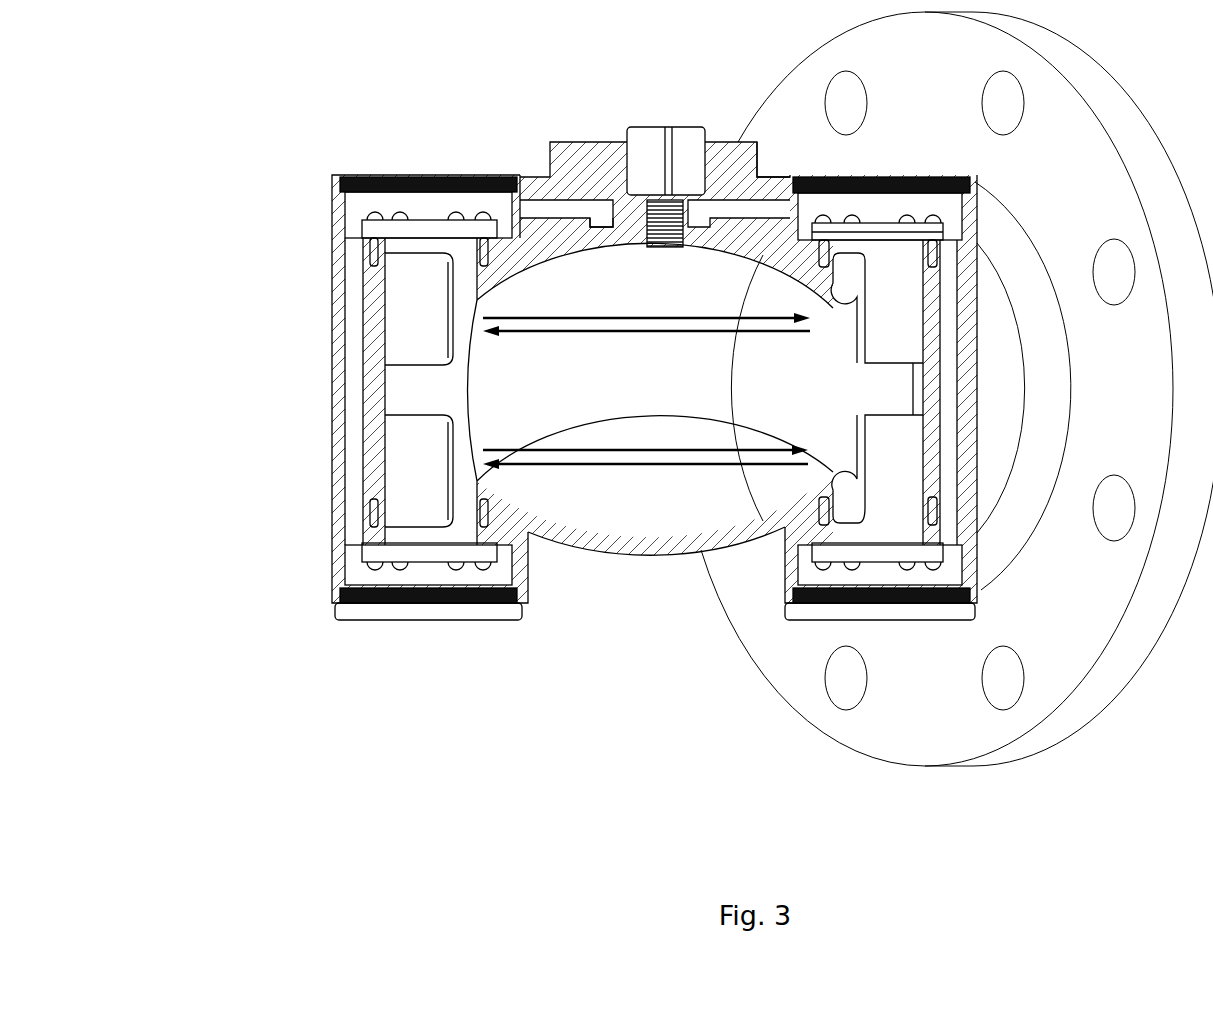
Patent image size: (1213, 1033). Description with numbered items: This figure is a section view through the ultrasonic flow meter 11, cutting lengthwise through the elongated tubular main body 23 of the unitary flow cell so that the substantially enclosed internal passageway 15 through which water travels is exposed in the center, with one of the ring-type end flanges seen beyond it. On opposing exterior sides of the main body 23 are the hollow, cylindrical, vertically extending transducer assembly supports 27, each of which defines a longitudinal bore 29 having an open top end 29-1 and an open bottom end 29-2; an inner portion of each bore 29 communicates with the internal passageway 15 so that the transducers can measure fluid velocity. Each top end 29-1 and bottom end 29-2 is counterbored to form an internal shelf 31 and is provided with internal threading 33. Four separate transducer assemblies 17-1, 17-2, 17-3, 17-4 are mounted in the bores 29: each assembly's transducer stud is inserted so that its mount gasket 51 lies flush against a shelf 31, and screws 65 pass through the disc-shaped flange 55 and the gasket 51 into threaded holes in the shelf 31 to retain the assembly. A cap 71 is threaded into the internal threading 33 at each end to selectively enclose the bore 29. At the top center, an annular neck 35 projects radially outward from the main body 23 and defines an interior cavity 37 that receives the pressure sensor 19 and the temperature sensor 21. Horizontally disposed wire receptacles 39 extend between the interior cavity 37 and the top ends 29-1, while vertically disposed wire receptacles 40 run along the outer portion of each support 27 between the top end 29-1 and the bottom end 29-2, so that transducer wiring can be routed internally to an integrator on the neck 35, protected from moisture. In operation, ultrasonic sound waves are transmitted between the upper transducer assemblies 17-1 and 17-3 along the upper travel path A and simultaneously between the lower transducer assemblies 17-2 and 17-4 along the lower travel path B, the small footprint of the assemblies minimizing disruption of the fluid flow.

The ultrasonic flow meter 11 is at (1118, 807).
The internal passageway 15 is at (637, 547).
The transducer assembly 17-1 is at (440, 336).
The transducer assembly 17-2 is at (440, 494).
The transducer assembly 17-3 is at (922, 336).
The transducer assembly 17-4 is at (922, 486).
The pressure sensor 19 is at (670, 140).
The temperature sensor 21 is at (603, 208).
The main body 23 is at (668, 550).
The transducer assembly support 27 is at (340, 487).
The longitudinal bore 29 is at (400, 395).
The open top end 29-1 is at (873, 210).
The open bottom end 29-2 is at (810, 570).
The internal shelf 31 is at (355, 548).
The internal threading 33 is at (340, 190).
The annular neck 35 is at (757, 152).
The interior cavity 37 is at (613, 162).
The horizontally-disposed wire receptacle 39 is at (730, 215).
The vertically-disposed wire receptacle 40 is at (950, 408).
The mount gasket 51 is at (930, 245).
The flange 55 is at (940, 232).
The screw 65 is at (405, 215).
The cap 71 is at (915, 620).
The upper travel path A is at (646, 349).
The lower travel path B is at (645, 434).